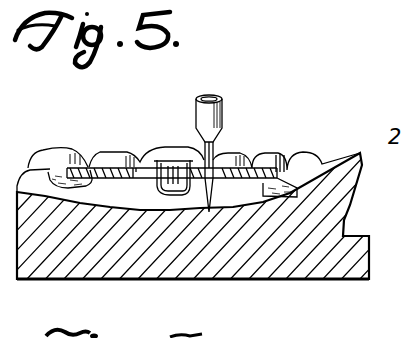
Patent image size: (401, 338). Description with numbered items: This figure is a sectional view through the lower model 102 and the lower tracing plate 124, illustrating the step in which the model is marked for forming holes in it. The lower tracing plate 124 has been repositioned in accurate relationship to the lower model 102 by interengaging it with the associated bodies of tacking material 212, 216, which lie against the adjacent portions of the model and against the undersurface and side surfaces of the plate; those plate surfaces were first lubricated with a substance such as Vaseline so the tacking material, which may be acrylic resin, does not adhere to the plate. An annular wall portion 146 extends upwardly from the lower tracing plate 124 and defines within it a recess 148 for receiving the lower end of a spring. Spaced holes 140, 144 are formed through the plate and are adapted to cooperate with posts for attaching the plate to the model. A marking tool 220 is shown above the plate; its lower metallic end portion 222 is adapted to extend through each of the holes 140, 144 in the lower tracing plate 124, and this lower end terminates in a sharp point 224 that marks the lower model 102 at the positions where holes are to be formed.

The lower model 102 is at (311, 289).
The lower tracing plate 124 is at (105, 160).
The body of tacking material 212 is at (64, 160).
The annular wall portion 146 is at (158, 166).
The recess 148 is at (180, 159).
The marking tool 220 is at (232, 110).
The lower metallic end portion 222 is at (215, 162).
The hole 144 is at (216, 190).
The sharp point 224 is at (209, 214).
The hole 140 is at (133, 179).
The body of tacking material 216 is at (293, 186).